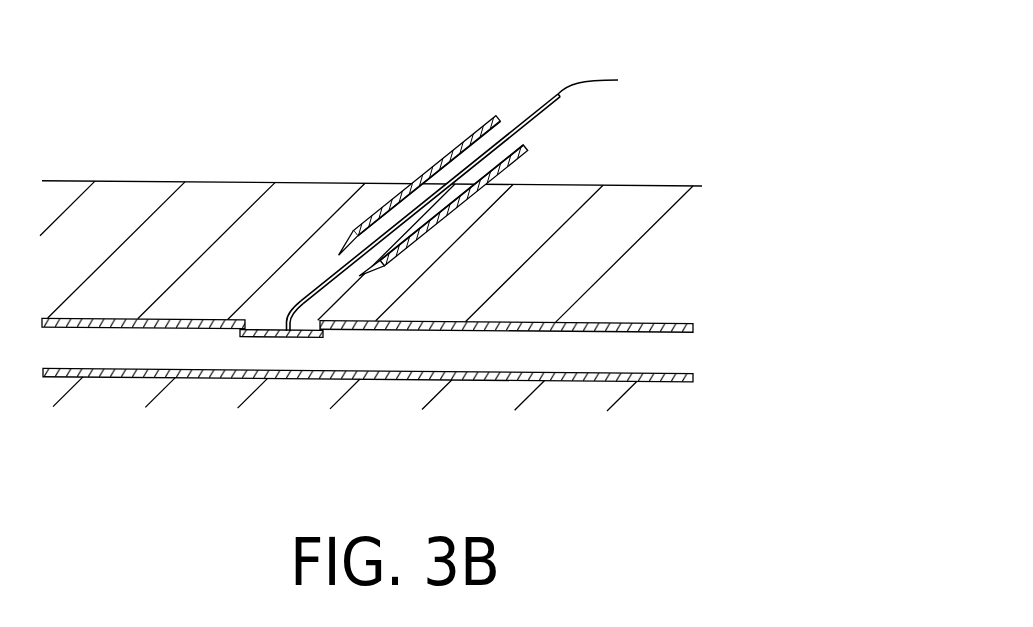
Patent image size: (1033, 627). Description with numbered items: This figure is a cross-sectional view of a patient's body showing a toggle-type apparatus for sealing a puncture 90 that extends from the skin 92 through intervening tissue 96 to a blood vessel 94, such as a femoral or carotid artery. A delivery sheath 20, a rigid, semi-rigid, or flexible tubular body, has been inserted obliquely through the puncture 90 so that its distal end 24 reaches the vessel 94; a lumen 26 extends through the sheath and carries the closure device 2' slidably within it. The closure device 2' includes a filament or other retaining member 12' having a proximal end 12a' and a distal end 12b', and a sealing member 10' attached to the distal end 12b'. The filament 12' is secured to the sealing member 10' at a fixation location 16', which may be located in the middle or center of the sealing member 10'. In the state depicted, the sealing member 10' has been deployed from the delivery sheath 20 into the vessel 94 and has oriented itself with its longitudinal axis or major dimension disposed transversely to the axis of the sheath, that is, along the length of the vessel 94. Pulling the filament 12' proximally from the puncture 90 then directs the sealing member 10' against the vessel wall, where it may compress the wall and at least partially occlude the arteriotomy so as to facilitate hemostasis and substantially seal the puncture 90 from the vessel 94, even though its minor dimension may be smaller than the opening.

The closure device 2' is at (417, 238).
The sealing member 10' is at (250, 369).
The filament 12' is at (445, 199).
The proximal end 12a' is at (597, 67).
The distal end 12b' is at (252, 343).
The fixation location 16' is at (304, 379).
The delivery sheath 20 is at (403, 175).
The distal end 24 is at (352, 232).
The lumen 26 is at (440, 172).
The puncture 90 is at (288, 294).
The skin 92 is at (628, 181).
The blood vessel 94 is at (655, 368).
The tissue 96 is at (600, 255).